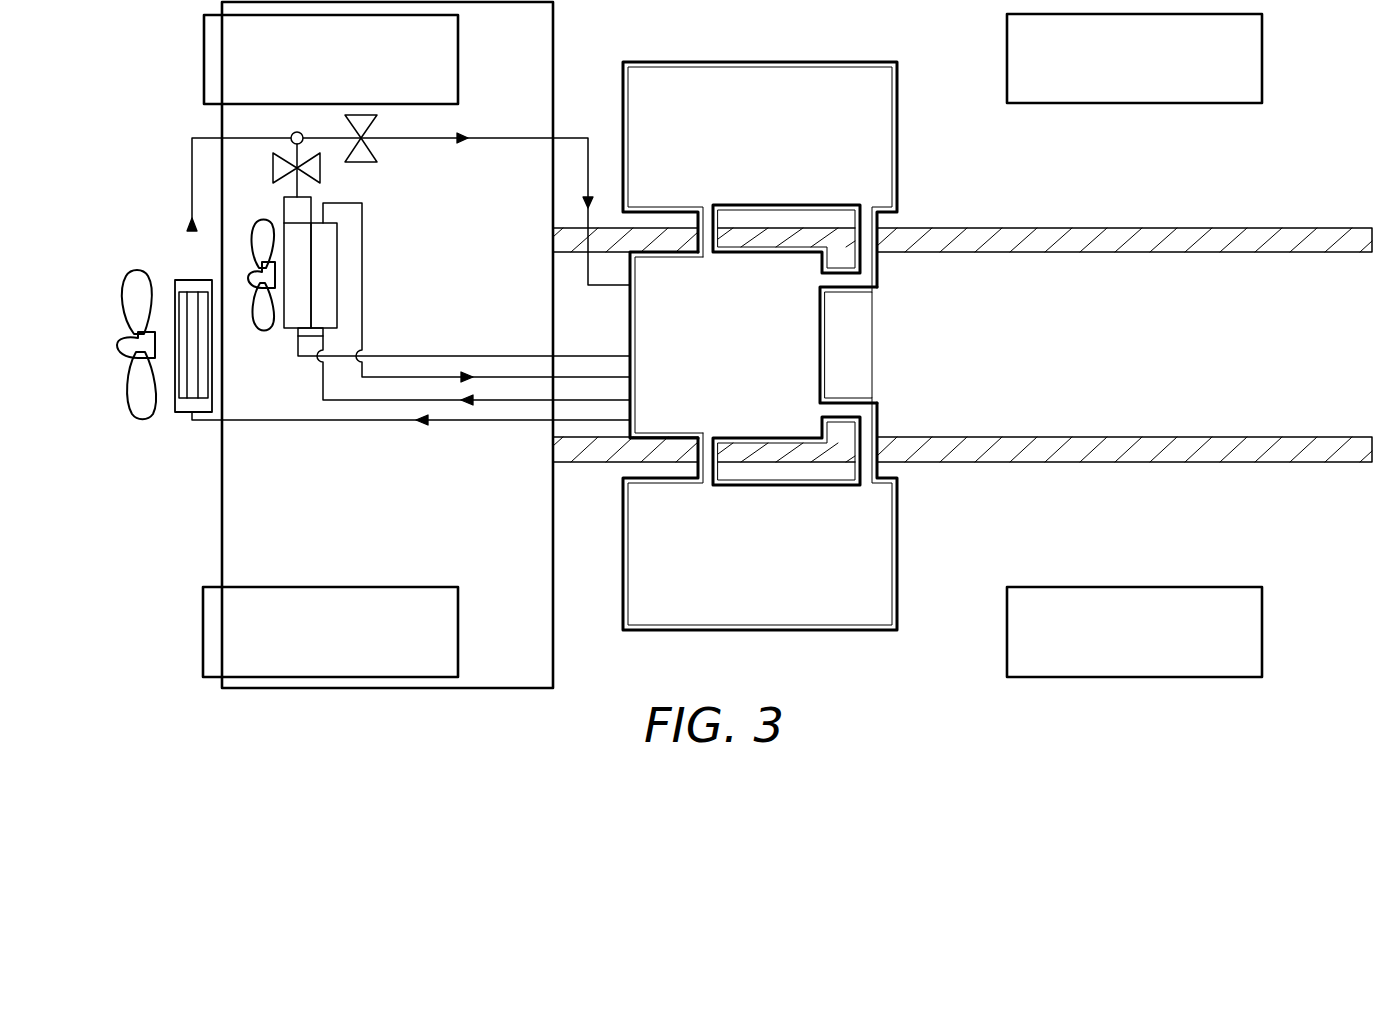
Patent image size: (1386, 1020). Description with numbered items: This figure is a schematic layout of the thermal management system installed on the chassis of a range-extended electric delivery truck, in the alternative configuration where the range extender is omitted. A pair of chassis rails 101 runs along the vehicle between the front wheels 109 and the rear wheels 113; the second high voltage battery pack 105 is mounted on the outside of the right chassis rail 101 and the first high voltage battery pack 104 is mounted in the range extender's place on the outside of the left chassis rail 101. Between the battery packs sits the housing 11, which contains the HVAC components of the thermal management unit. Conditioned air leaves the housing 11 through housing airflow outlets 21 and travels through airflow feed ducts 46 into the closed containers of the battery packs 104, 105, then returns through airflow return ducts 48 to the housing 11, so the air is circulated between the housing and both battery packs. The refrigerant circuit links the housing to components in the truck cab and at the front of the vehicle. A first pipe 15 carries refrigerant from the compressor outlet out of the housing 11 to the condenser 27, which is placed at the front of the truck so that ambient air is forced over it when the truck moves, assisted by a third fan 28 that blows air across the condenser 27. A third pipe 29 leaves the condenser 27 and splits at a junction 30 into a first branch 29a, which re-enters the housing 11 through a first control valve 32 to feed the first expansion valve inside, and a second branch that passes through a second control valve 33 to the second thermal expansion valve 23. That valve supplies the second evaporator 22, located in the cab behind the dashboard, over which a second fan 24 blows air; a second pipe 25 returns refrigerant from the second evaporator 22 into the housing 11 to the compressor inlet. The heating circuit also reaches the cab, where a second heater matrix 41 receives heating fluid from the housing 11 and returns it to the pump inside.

The housing 11 is at (713, 356).
The first pipe 15 is at (486, 432).
The housing airflow outlets 21 is at (842, 296).
The second evaporator 22 is at (290, 332).
The second thermal expansion valve 23 is at (287, 194).
The second fan 24 is at (257, 221).
The second pipe 25 is at (483, 352).
The condenser 27 is at (182, 279).
The third fan 28 is at (125, 405).
The third pipe 29 is at (192, 150).
The first branch 29a is at (483, 143).
The junction 30 is at (291, 135).
The first control valve 32 is at (373, 127).
The second control valve 33 is at (320, 173).
The second heater matrix 41 is at (340, 238).
The airflow feed ducts 46 is at (880, 272).
The airflow return ducts 48 is at (722, 222).
The chassis rails 101 is at (1293, 227).
The first high voltage battery pack 104 is at (740, 578).
The second high voltage battery pack 105 is at (740, 130).
The front wheels 109 is at (311, 70).
The rear wheels 113 is at (1114, 70).